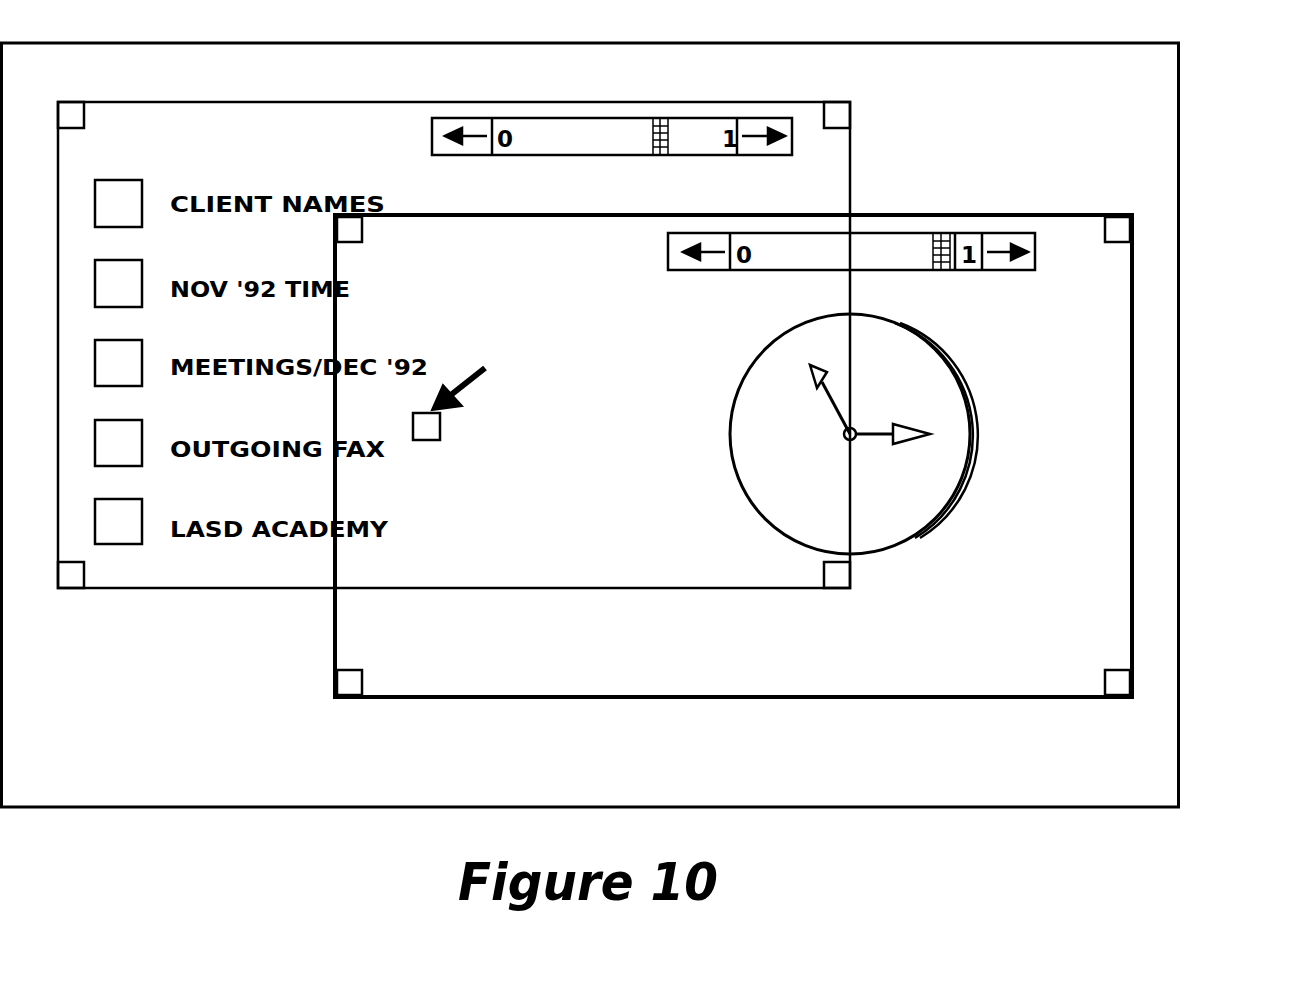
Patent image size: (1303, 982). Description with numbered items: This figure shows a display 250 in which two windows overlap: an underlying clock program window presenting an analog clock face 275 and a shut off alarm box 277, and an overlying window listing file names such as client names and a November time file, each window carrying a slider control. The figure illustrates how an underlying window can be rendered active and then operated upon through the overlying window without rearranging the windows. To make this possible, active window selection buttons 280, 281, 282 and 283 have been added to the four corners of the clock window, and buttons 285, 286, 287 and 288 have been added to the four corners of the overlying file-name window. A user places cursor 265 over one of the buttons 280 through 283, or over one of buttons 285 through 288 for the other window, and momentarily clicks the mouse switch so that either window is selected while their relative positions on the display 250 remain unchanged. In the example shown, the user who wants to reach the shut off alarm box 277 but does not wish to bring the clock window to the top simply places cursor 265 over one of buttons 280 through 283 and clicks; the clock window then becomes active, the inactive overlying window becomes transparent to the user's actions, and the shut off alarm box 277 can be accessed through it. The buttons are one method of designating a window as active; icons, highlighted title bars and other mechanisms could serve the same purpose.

The display 250 is at (1178, 368).
The cursor 265 is at (470, 378).
The clock face 275 is at (940, 520).
The shut off alarm box 277 is at (430, 442).
The active window selection button 280 is at (1125, 216).
The active window selection button 281 is at (1118, 700).
The active window selection button 282 is at (356, 228).
The active window selection button 283 is at (350, 700).
The button 285 is at (851, 109).
The button 286 is at (838, 590).
The button 287 is at (68, 590).
The button 288 is at (72, 102).